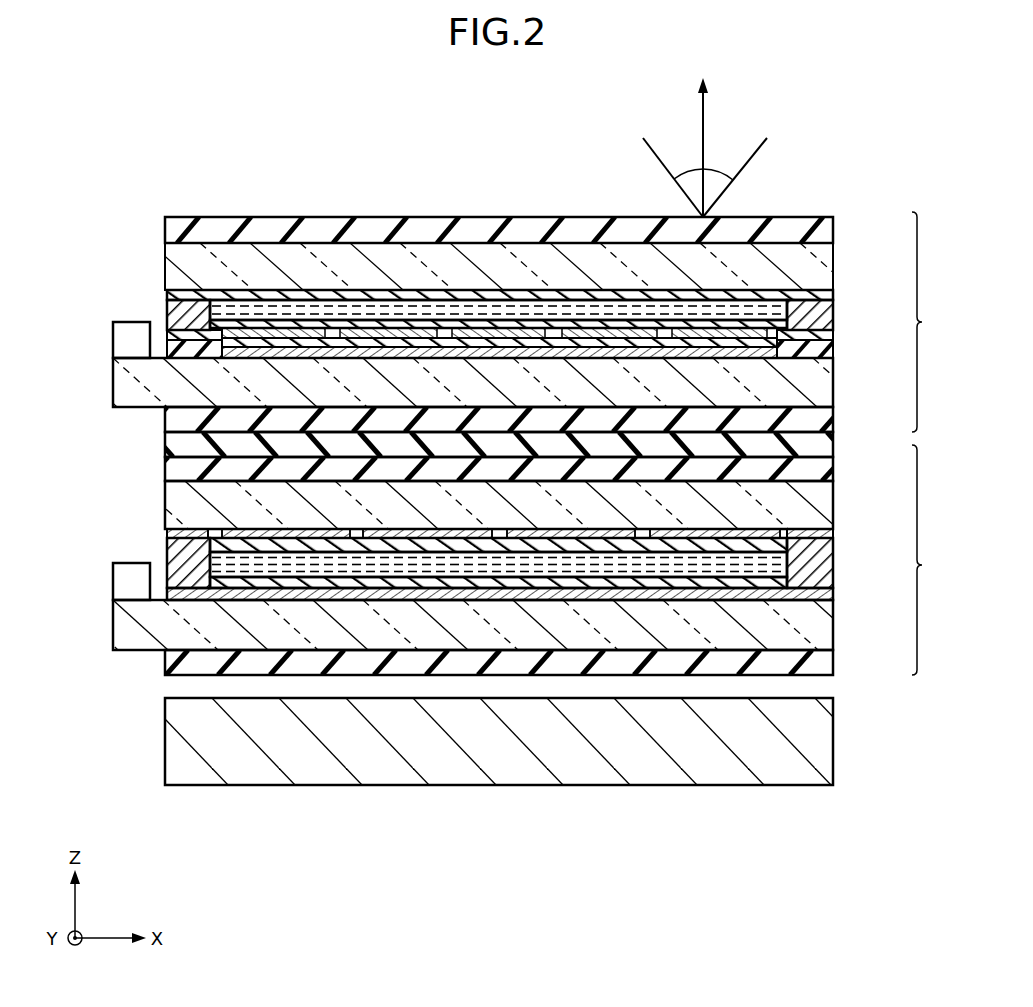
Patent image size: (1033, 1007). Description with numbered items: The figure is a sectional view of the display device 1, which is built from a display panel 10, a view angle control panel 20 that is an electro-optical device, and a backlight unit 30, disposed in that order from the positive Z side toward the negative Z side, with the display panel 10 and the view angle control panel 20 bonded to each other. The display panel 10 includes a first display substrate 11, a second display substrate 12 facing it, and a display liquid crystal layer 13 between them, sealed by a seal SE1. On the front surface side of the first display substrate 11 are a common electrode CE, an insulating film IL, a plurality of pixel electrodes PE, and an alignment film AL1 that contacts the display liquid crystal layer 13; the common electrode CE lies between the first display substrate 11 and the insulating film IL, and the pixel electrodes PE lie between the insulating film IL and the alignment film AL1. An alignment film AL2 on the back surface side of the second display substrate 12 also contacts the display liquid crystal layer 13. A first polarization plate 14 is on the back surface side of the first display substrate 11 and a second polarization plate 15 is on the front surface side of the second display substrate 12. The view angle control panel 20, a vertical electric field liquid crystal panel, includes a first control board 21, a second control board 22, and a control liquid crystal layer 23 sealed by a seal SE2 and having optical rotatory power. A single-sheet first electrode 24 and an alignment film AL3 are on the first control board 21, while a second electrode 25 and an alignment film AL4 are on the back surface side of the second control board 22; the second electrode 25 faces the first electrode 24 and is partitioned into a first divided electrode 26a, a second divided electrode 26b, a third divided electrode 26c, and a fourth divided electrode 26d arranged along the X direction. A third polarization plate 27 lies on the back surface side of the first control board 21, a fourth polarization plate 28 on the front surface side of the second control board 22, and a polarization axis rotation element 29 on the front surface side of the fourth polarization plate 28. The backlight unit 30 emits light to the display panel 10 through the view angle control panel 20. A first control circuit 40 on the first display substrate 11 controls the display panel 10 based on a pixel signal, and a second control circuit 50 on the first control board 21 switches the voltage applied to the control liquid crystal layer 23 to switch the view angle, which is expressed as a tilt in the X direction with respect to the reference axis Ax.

The display device 1 is at (830, 144).
The display panel 10 is at (932, 322).
The first display substrate 11 is at (835, 385).
The second display substrate 12 is at (835, 250).
The display liquid crystal layer 13 is at (785, 292).
The first polarization plate 14 is at (835, 420).
The second polarization plate 15 is at (835, 228).
The view angle control panel 20 is at (932, 560).
The first control board 21 is at (835, 627).
The second control board 22 is at (835, 508).
The control liquid crystal layer 23 is at (835, 573).
The first electrode 24 is at (247, 598).
The second electrode 25 is at (297, 860).
The first divided electrode 26a is at (298, 538).
The second divided electrode 26b is at (440, 538).
The third divided electrode 26c is at (575, 538).
The fourth divided electrode 26d is at (715, 538).
The third polarization plate 27 is at (835, 662).
The fourth polarization plate 28 is at (835, 485).
The polarization axis rotation element 29 is at (835, 463).
The backlight unit 30 is at (835, 742).
The first control circuit 40 is at (130, 321).
The second control circuit 50 is at (130, 563).
The alignment film AL1 is at (835, 340).
The alignment film AL2 is at (835, 295).
The alignment film AL3 is at (835, 595).
The alignment film AL4 is at (835, 530).
The seal SE1 is at (835, 318).
The seal SE2 is at (835, 552).
The insulating film IL is at (835, 363).
The common electrode CE is at (297, 352).
The pixel electrode PE is at (530, 322).
The reference axis Ax is at (705, 108).